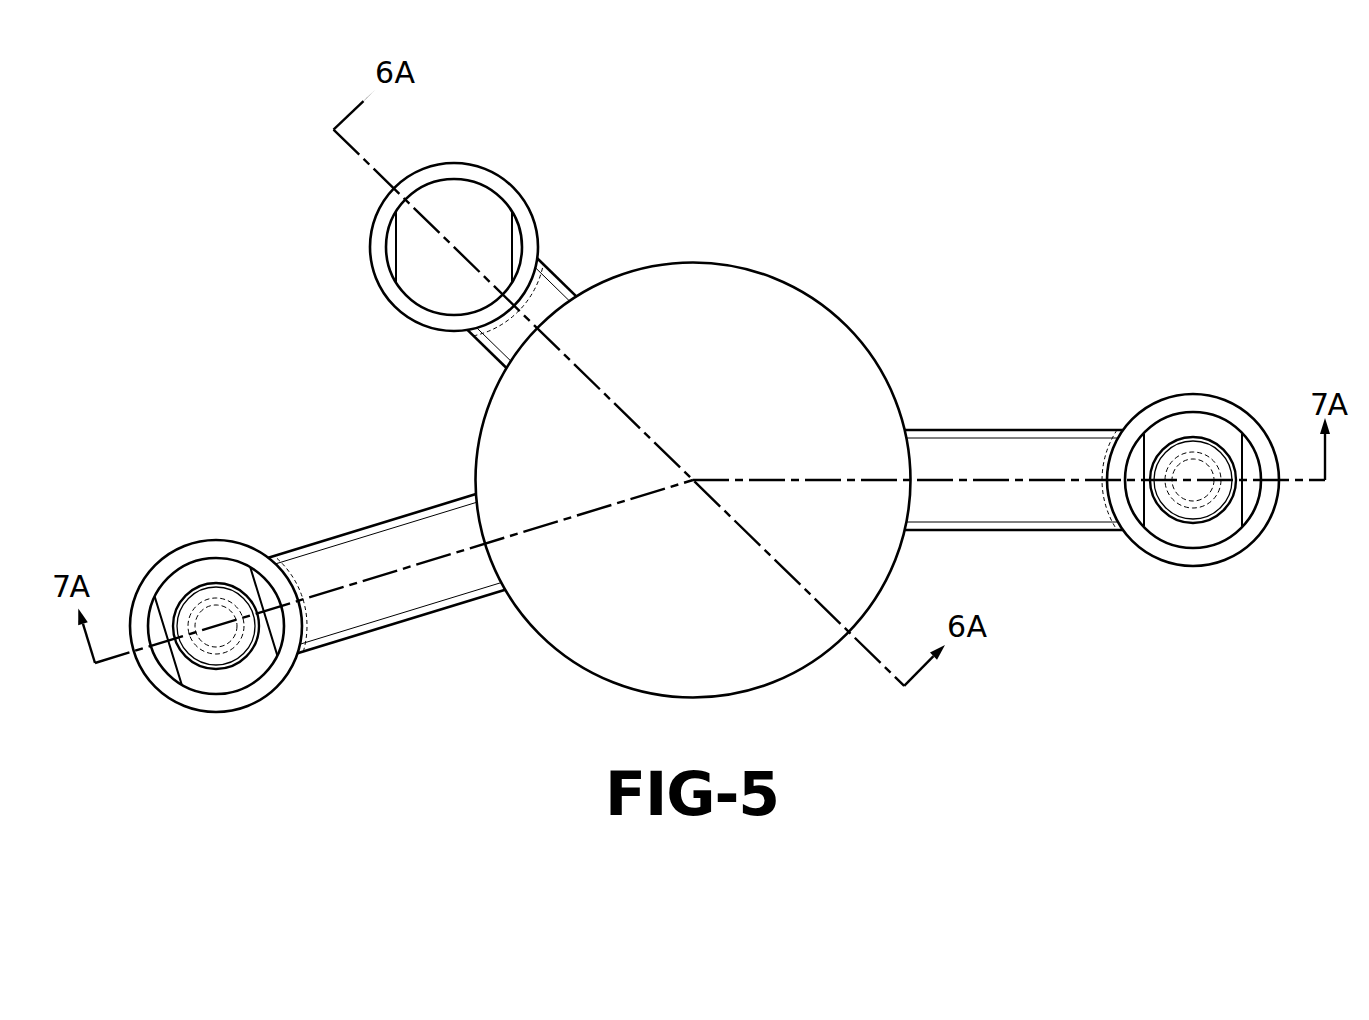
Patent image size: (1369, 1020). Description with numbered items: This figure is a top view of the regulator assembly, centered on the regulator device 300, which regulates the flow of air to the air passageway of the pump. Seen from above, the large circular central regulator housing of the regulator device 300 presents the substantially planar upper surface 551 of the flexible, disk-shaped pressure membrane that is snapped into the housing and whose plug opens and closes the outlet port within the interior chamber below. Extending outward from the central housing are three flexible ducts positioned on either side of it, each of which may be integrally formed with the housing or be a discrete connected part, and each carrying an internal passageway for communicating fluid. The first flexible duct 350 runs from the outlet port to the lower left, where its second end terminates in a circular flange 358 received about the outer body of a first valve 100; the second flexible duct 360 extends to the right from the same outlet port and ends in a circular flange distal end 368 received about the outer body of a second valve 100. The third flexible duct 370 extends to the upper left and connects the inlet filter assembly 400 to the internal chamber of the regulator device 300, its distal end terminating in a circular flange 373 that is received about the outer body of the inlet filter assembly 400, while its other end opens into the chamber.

The valve 100 is at (157, 503).
The regulator device 300 is at (818, 250).
The first flexible duct 350 is at (362, 548).
The circular flange 358 is at (260, 697).
The second flexible duct 360 is at (1003, 448).
The circular flange distal end 368 is at (1248, 540).
The third flexible duct 370 is at (497, 347).
The circular flange 373 is at (500, 176).
The inlet filter assembly 400 is at (419, 265).
The upper surface 551 is at (758, 385).